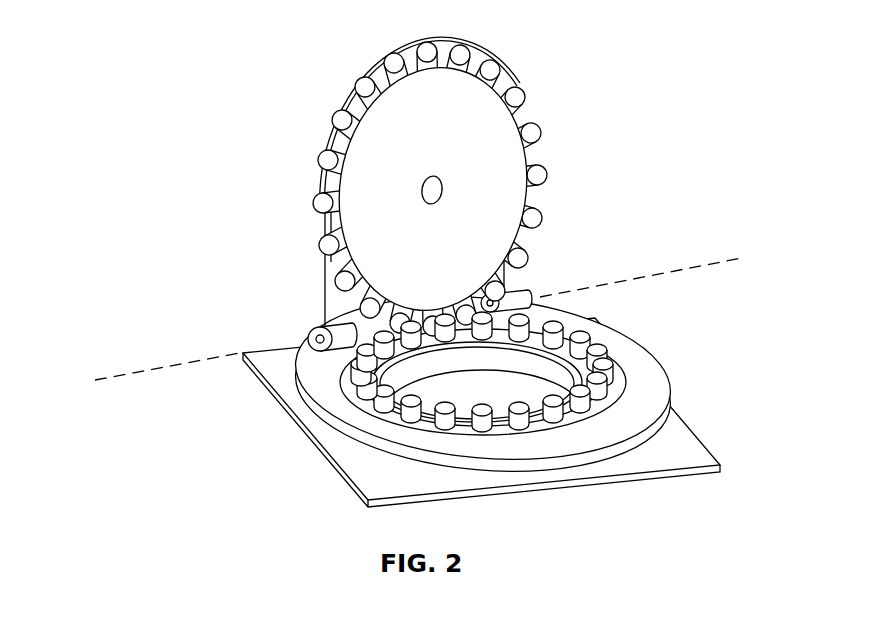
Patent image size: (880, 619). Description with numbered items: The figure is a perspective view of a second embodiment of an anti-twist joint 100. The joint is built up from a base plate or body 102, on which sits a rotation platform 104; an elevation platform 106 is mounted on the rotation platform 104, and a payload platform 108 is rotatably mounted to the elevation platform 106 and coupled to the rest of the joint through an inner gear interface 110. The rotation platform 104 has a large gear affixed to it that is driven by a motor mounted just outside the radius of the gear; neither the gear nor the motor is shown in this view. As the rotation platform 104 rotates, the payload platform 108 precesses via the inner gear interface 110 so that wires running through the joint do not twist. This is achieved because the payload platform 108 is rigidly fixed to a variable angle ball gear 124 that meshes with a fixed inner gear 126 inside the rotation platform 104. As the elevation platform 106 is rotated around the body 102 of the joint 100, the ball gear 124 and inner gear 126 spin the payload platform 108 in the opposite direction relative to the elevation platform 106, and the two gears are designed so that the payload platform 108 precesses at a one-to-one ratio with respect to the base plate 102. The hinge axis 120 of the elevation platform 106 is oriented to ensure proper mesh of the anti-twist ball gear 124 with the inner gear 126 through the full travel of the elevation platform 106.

The anti-twist joint 100 is at (147, 105).
The base plate 102 is at (673, 455).
The rotation platform 104 is at (342, 398).
The elevation platform 106 is at (377, 70).
The payload platform 108 is at (490, 189).
The inner gear interface 110 is at (543, 270).
The hinge axis 120 is at (132, 372).
The variable angle ball gear 124 is at (535, 118).
The fixed inner gear 126 is at (578, 319).